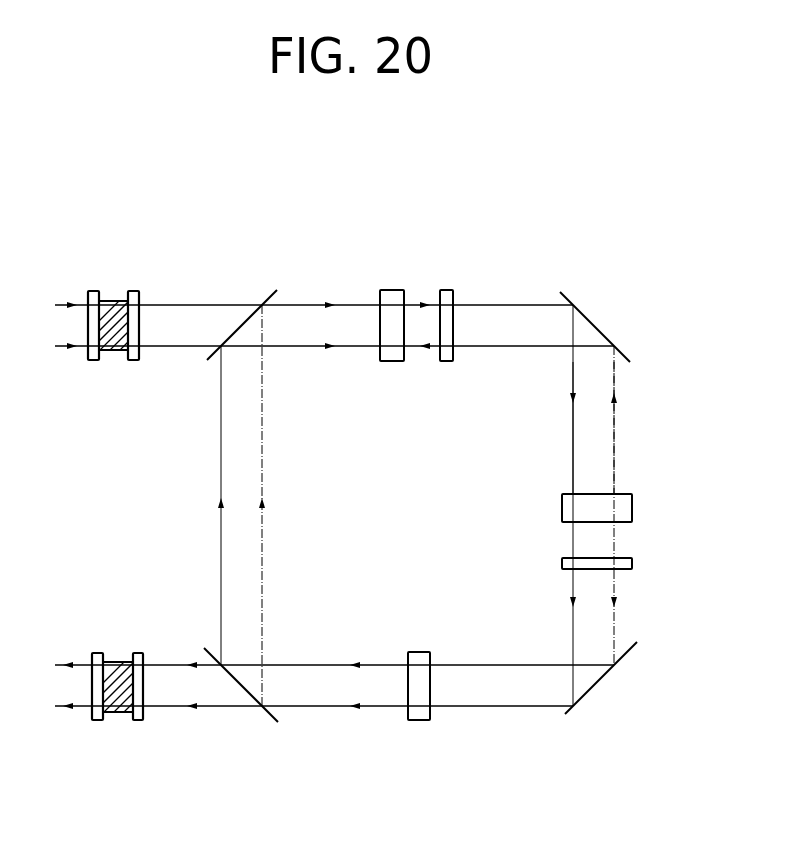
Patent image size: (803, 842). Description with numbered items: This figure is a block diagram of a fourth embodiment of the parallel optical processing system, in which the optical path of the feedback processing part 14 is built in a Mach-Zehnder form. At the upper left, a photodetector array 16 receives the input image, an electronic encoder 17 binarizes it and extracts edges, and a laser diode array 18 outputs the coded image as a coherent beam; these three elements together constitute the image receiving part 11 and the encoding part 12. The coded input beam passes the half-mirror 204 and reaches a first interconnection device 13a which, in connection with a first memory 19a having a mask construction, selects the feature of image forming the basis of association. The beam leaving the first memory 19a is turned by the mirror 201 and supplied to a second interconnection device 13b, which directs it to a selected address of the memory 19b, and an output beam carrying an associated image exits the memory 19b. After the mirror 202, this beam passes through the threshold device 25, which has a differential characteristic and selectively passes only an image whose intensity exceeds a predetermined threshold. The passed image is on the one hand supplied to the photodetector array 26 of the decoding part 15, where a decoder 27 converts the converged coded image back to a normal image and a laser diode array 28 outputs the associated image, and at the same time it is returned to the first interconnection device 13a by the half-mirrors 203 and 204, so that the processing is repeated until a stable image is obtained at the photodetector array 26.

The image receiving part 11 is at (115, 364).
The encoding part 12 is at (117, 350).
The first interconnection device 13a is at (392, 290).
The second interconnection device 13b is at (625, 507).
The feedback processing part 14 is at (562, 434).
The decoding part 15 is at (125, 712).
The photodetector array 16 is at (93, 291).
The electronic encoder 17 is at (112, 301).
The laser diode array 18 is at (133, 291).
The first memory 19a is at (450, 290).
The memory 19b is at (625, 563).
The threshold device 25 is at (420, 720).
The photodetector array 26 is at (138, 653).
The decoder 27 is at (117, 662).
The laser diode array 28 is at (97, 653).
The mirror 201 is at (582, 310).
The mirror 202 is at (605, 682).
The half-mirror 203 is at (243, 692).
The half-mirror 204 is at (258, 305).